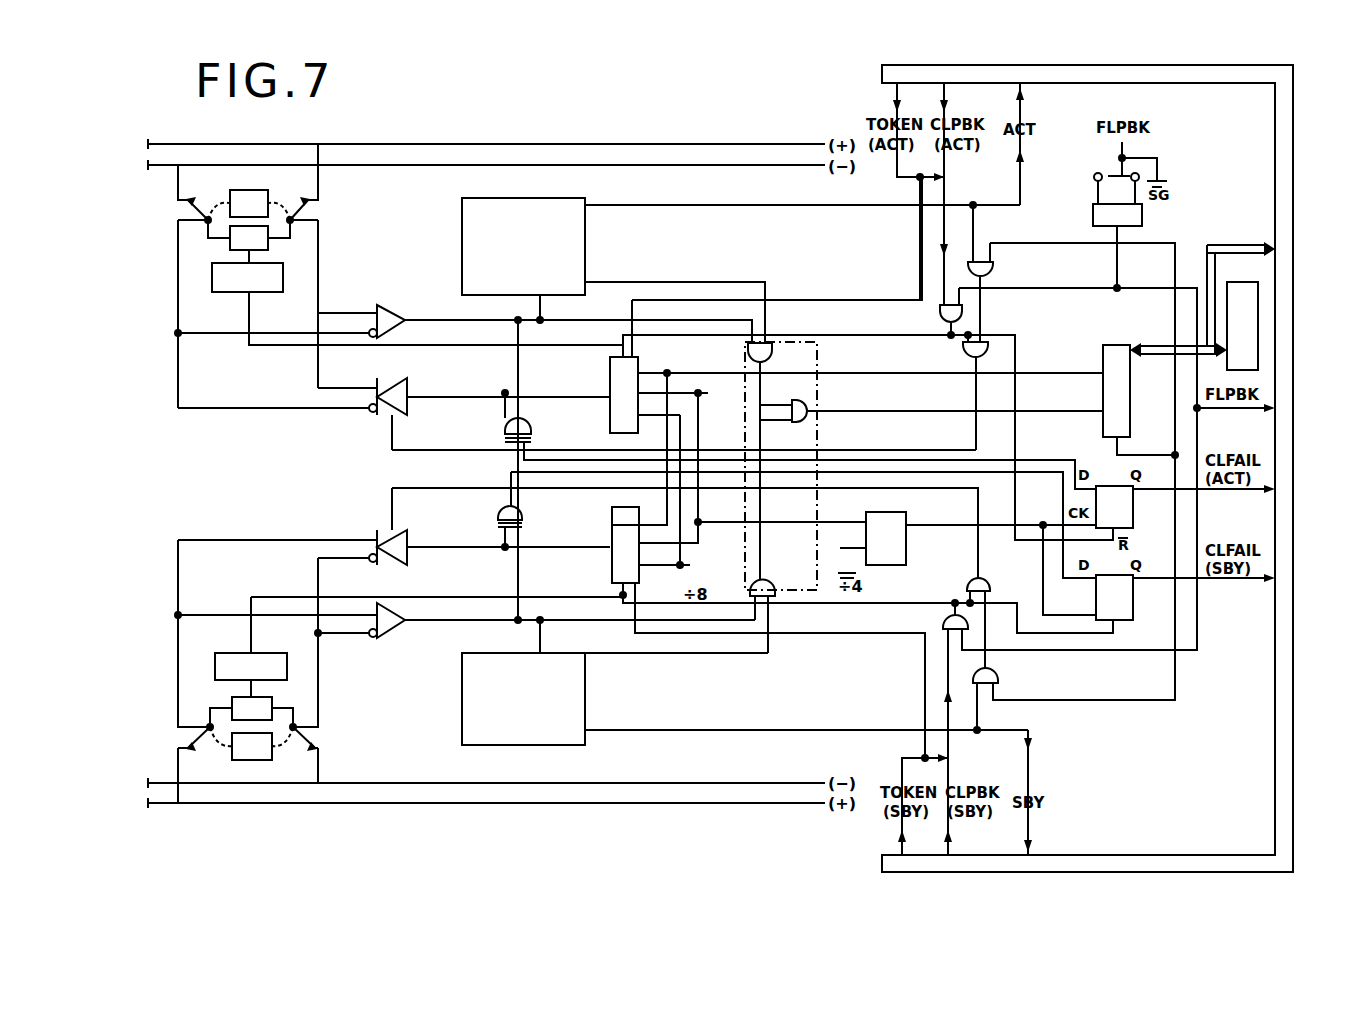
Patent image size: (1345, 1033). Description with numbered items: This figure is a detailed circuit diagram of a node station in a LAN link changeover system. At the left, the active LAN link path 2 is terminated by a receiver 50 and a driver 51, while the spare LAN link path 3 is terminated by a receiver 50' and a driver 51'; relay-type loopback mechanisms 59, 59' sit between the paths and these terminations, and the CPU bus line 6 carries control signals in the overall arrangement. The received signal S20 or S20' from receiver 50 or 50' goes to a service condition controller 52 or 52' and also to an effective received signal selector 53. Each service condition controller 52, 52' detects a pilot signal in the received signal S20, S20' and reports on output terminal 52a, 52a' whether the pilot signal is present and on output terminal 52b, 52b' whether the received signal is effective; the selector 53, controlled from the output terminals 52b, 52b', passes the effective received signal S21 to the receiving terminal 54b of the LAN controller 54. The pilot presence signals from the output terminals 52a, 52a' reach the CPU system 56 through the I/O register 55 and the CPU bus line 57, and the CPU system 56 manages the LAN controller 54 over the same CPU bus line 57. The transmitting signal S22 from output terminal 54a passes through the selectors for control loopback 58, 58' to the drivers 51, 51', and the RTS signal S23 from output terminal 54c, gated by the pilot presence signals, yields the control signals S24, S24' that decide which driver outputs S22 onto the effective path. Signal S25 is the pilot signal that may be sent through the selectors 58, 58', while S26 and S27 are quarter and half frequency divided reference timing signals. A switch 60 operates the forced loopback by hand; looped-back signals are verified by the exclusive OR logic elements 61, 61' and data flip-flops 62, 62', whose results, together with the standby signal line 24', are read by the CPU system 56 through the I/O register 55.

The active LAN link path 2 is at (455, 142).
The spare LAN link path 3 is at (593, 803).
The CPU bus line 6 is at (178, 190).
The standby signal line 24' is at (1021, 629).
The receiver 50 is at (465, 311).
The receiver 50' is at (466, 637).
The driver 51 is at (394, 407).
The driver 51' is at (394, 535).
The service condition controller 52 is at (494, 246).
The service condition controller 52' is at (495, 699).
The output terminal 52a is at (802, 193).
The output terminal 52b is at (675, 300).
The output terminal 52a' is at (806, 745).
The output terminal 52b' is at (676, 672).
The effective received signal selector 53 is at (818, 432).
The LAN controller 54 is at (1118, 345).
The output terminal 54a is at (1103, 370).
The receiving terminal 54b is at (1103, 408).
The output terminal 54c is at (1115, 444).
The I/O register 55 is at (1275, 146).
The CPU system 56 is at (1242, 282).
The CPU bus line 57 is at (1216, 245).
The selector for control loopback 58 is at (632, 462).
The selector for control loopback 58' is at (601, 546).
The loopback mechanism 59 is at (214, 241).
The loopback mechanism 59' is at (211, 706).
The switch 60 is at (1094, 168).
The exclusive OR logic element 61 is at (799, 439).
The exclusive OR logic element 61' is at (797, 525).
The data flip-flop 62 is at (1185, 506).
The data flip-flop 62' is at (1185, 609).
The received signal S20 is at (421, 296).
The received signal S20' is at (436, 636).
The effective received signal S21 is at (872, 408).
The transmitting signal S22 is at (872, 370).
The RTS signal S23 is at (1146, 452).
The driver control signal S24 is at (716, 372).
The driver control signal S24' is at (685, 533).
The pilot signal S25 is at (708, 400).
The 1/4 frequency divided signal S26 is at (868, 570).
The 1/2 frequency divided signal S27 is at (706, 572).